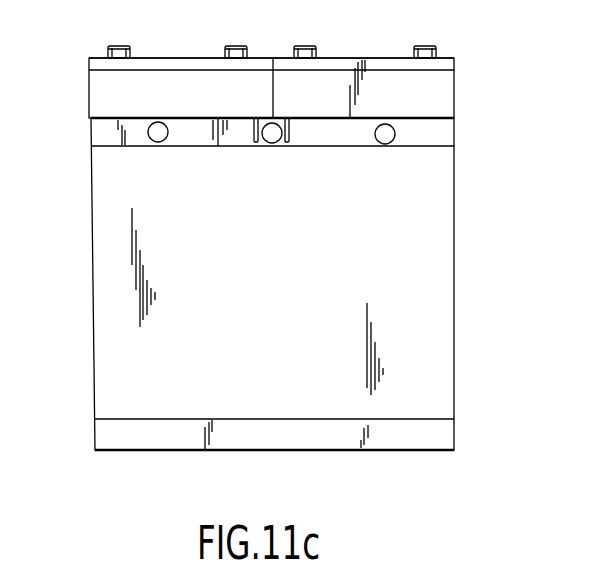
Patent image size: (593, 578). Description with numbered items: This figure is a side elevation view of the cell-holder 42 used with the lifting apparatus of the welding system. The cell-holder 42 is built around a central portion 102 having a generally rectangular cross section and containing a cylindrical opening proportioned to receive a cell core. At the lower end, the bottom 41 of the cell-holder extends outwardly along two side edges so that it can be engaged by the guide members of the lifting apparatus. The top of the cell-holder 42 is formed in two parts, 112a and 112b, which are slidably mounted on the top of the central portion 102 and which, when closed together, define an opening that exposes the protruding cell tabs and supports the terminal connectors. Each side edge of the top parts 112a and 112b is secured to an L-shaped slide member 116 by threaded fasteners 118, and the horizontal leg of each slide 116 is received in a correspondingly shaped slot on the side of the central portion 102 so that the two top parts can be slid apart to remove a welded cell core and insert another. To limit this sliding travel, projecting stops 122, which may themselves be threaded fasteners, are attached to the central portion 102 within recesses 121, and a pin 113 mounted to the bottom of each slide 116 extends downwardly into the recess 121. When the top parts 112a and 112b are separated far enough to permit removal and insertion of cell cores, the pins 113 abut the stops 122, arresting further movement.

The bottom 41 is at (102, 432).
The cell-holder 42 is at (498, 215).
The central portion 102 is at (443, 288).
The top part 112a is at (370, 60).
The top part 112b is at (172, 60).
The pin 113 is at (255, 143).
The L-shaped slide member 116 is at (102, 92).
The threaded fasteners 118 is at (120, 46).
The recess 121 is at (437, 142).
The projecting stops 122 is at (150, 138).